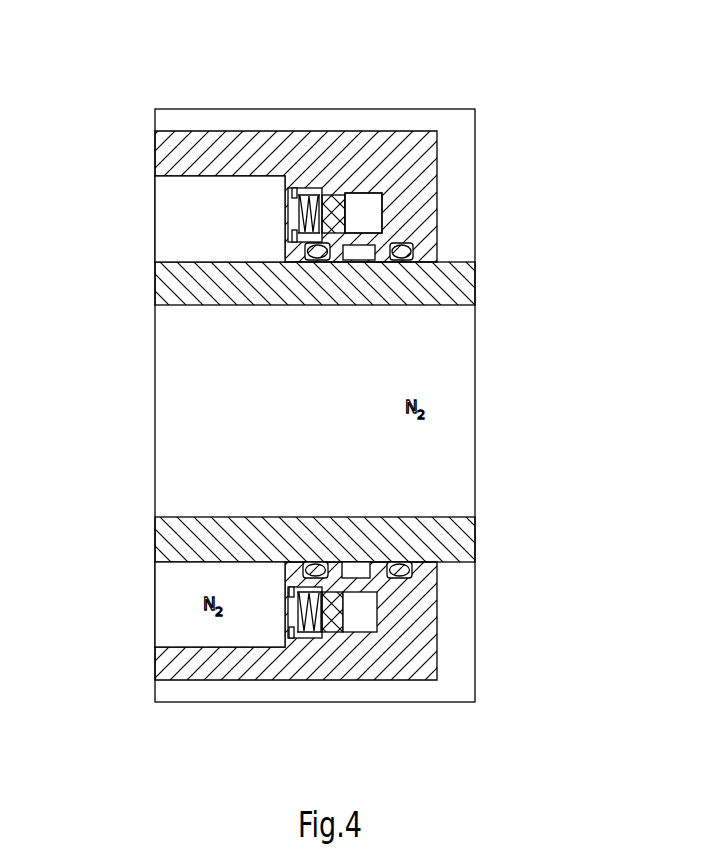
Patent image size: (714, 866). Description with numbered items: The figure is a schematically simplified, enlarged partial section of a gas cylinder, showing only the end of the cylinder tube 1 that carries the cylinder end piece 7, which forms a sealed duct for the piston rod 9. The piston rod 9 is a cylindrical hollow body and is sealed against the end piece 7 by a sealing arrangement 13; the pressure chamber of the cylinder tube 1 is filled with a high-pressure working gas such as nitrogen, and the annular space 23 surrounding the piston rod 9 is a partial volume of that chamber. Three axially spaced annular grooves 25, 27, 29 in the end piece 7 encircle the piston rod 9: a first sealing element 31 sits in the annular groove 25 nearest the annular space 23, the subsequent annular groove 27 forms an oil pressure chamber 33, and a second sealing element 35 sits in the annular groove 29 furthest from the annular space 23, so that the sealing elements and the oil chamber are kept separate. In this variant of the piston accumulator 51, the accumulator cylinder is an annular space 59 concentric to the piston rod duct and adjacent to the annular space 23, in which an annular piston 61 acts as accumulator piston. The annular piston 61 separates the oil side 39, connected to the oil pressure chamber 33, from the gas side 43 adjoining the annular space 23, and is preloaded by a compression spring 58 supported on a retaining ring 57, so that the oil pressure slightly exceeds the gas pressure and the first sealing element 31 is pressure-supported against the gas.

The cylinder tube 1 is at (183, 160).
The cylinder end piece 7 is at (412, 172).
The piston rod 9 is at (437, 538).
The sealing arrangement 13 is at (332, 322).
The annular space 23 is at (196, 200).
The annular groove 25 is at (302, 560).
The annular groove 27 is at (353, 562).
The annular groove 29 is at (387, 562).
The first sealing element 31 is at (317, 260).
The oil pressure chamber 33 is at (357, 262).
The second sealing element 35 is at (398, 262).
The oil side 39 is at (370, 218).
The gas side 43 is at (290, 209).
The piston accumulator 51 is at (372, 192).
The retaining ring 57 is at (290, 628).
The compression spring 58 is at (307, 632).
The annular space 59 is at (358, 632).
The annular piston 61 is at (332, 200).